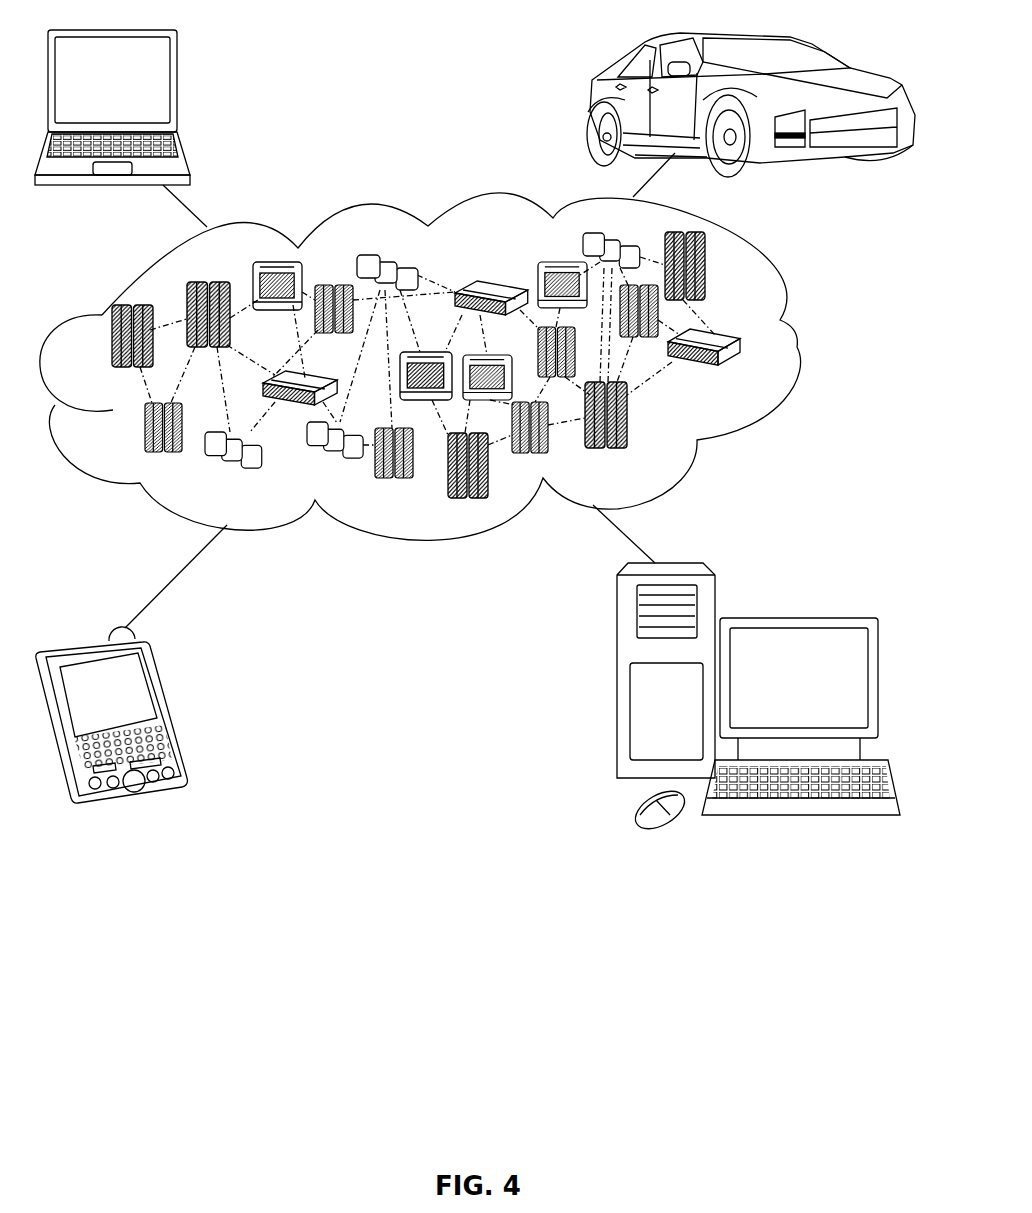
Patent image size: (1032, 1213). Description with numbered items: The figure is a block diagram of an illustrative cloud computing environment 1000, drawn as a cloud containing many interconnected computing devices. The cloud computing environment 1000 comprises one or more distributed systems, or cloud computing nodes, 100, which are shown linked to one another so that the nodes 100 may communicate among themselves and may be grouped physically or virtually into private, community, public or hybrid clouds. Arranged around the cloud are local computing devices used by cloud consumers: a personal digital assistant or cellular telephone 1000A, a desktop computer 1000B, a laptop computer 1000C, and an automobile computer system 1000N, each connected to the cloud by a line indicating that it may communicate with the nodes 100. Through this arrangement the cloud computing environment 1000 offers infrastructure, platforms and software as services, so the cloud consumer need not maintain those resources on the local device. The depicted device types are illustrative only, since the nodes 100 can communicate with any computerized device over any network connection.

The cloud computing environment 1000 is at (800, 347).
The distributed systems 100 is at (750, 376).
The personal digital assistant or cellular telephone 1000A is at (167, 708).
The desktop computer 1000B is at (807, 598).
The laptop computer 1000C is at (180, 90).
The automobile computer system 1000N is at (588, 102).